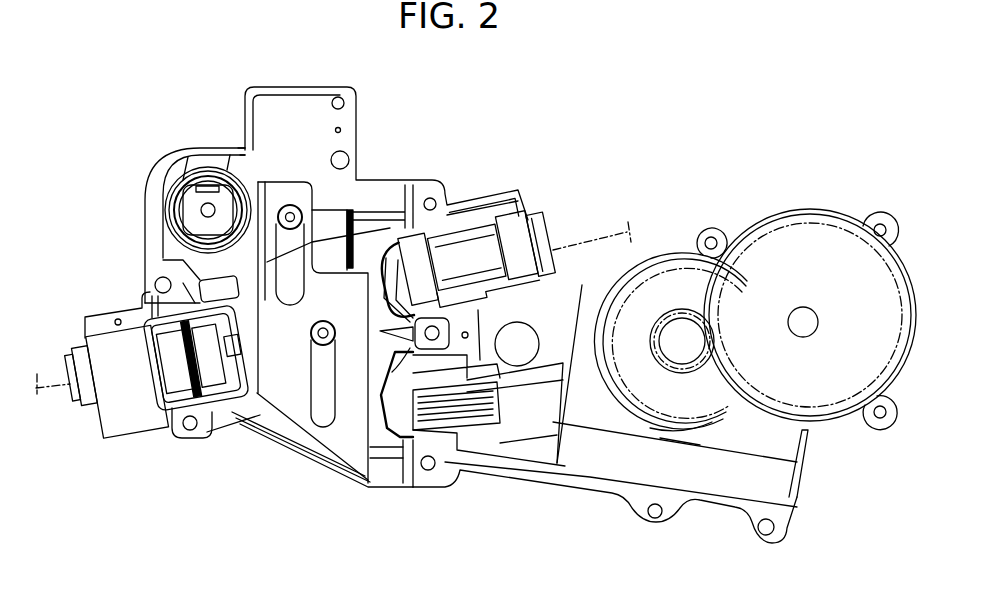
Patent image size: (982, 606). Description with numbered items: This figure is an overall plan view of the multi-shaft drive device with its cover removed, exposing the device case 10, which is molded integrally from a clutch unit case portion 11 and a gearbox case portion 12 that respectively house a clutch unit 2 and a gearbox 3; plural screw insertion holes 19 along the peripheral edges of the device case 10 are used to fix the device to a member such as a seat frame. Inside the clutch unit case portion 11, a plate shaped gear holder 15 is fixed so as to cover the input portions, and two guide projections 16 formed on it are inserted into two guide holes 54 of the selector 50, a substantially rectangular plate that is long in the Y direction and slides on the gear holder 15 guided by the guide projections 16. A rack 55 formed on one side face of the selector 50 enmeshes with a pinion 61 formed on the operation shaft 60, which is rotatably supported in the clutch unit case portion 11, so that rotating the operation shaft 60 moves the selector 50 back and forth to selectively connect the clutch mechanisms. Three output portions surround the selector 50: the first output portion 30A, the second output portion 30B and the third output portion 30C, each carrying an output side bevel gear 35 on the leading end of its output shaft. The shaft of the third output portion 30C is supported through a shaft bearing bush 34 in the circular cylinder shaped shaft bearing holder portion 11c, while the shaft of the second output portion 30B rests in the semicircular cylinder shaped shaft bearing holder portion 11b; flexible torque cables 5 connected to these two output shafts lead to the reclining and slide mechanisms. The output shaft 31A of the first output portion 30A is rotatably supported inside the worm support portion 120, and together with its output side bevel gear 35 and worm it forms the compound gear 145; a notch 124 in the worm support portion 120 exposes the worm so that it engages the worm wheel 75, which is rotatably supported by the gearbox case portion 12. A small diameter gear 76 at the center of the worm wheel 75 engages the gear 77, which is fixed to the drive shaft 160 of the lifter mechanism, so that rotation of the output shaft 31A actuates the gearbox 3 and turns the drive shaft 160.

The clutch unit 2 is at (391, 198).
The gearbox 3 is at (762, 430).
The torque cable 5 is at (47, 375).
The device case 10 is at (614, 501).
The clutch unit case portion 11 is at (332, 485).
The shaft bearing holder portion 11b is at (505, 232).
The shaft bearing holder portion 11c is at (110, 380).
The gearbox case portion 12 is at (729, 539).
The gear holder 15 is at (262, 445).
The guide projection 16 is at (290, 204).
The screw insertion hole 19 is at (346, 156).
The first output portion 30A is at (476, 450).
The second output portion 30B is at (482, 254).
The third output portion 30C is at (182, 379).
The output shaft 31A is at (545, 425).
The shaft bearing bush 34 is at (518, 248).
The output side bevel gear 35 is at (450, 228).
The selector 50 is at (298, 437).
The guide hole 54 is at (303, 305).
The rack 55 is at (248, 150).
The operation shaft 60 is at (195, 218).
The pinion 61 is at (163, 260).
The worm wheel 75 is at (660, 283).
The small diameter gear 76 is at (690, 322).
The gear 77 is at (781, 250).
The worm support portion 120 is at (705, 500).
The notch 124 is at (677, 430).
The compound gear 145 is at (555, 352).
The drive shaft 160 is at (810, 308).